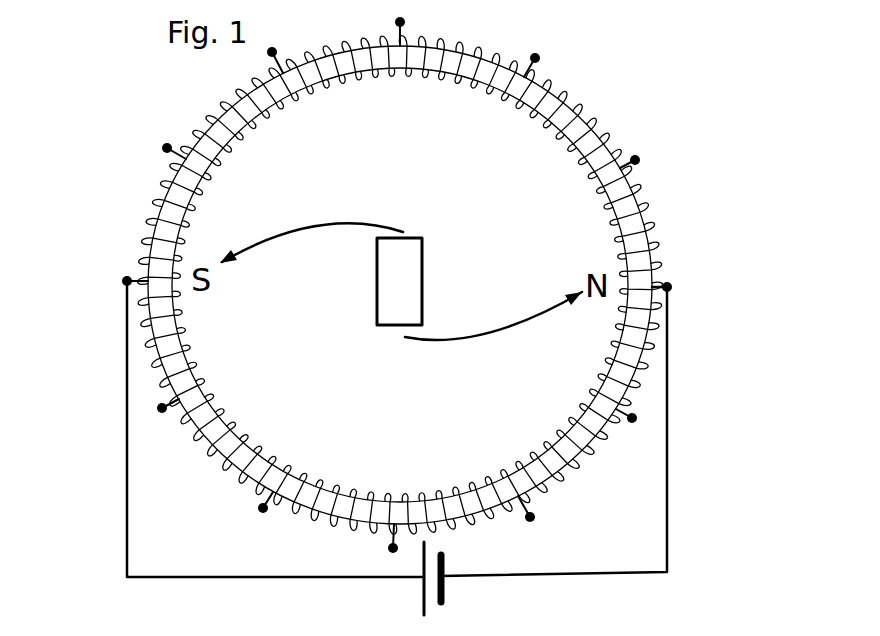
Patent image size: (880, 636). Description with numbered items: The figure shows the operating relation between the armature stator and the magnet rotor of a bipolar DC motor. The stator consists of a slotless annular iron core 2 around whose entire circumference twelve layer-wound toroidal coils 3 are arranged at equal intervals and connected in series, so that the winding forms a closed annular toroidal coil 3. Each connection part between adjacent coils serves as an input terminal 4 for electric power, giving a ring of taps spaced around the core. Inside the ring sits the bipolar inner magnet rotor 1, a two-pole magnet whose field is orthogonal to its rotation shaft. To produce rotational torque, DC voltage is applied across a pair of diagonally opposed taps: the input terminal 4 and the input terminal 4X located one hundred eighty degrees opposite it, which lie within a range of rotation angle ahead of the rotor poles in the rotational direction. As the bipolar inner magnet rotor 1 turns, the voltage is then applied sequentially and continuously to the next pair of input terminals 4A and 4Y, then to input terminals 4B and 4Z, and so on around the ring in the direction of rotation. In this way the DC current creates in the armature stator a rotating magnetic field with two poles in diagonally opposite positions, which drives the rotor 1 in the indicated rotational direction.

The bipolar inner magnet rotor 1 is at (413, 265).
The slotless annular iron core 2 is at (240, 116).
The layer-wound toroidal coil 3 is at (651, 215).
The input terminal 4 is at (669, 286).
The input terminal 4A is at (637, 159).
The input terminal 4B is at (537, 57).
The input terminal 4X is at (125, 280).
The input terminal 4Y is at (160, 409).
The input terminal 4Z is at (261, 509).